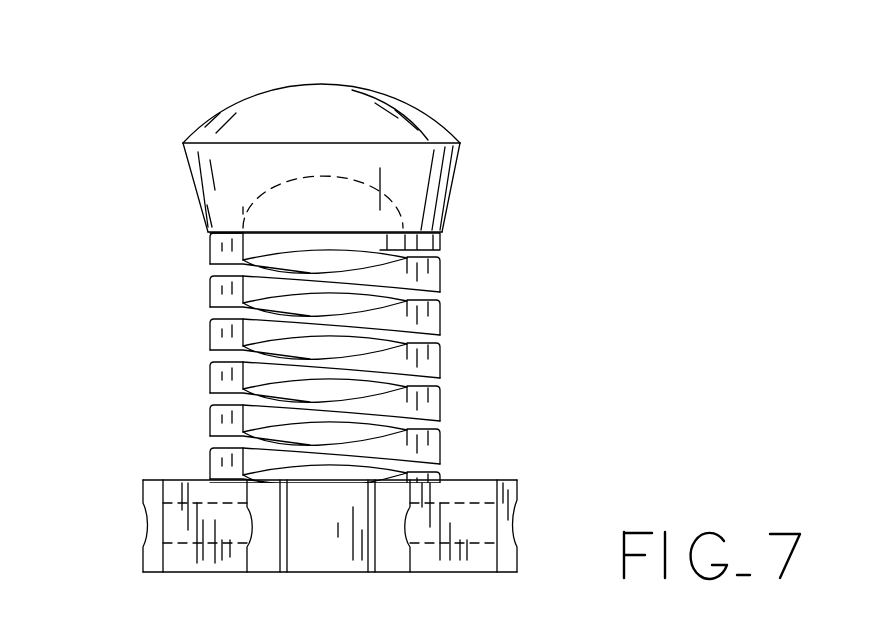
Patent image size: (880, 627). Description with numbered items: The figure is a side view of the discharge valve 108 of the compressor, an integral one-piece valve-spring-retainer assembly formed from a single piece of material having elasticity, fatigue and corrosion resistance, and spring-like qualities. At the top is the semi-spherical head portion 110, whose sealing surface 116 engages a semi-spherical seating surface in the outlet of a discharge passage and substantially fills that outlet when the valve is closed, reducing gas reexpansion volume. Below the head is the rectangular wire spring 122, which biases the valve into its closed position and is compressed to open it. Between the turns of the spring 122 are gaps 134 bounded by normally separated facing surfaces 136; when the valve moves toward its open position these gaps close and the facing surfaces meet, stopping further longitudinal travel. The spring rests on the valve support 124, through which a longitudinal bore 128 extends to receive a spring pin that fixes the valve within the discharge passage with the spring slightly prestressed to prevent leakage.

The discharge valve 108 is at (516, 250).
The semi-spherical head portion 110 is at (424, 105).
The sealing surface 116 is at (398, 58).
The rectangular wire spring 122 is at (460, 343).
The gaps 134 is at (211, 446).
The facing surfaces 136 is at (437, 467).
The valve support 124 is at (522, 481).
The bore 128 is at (161, 543).